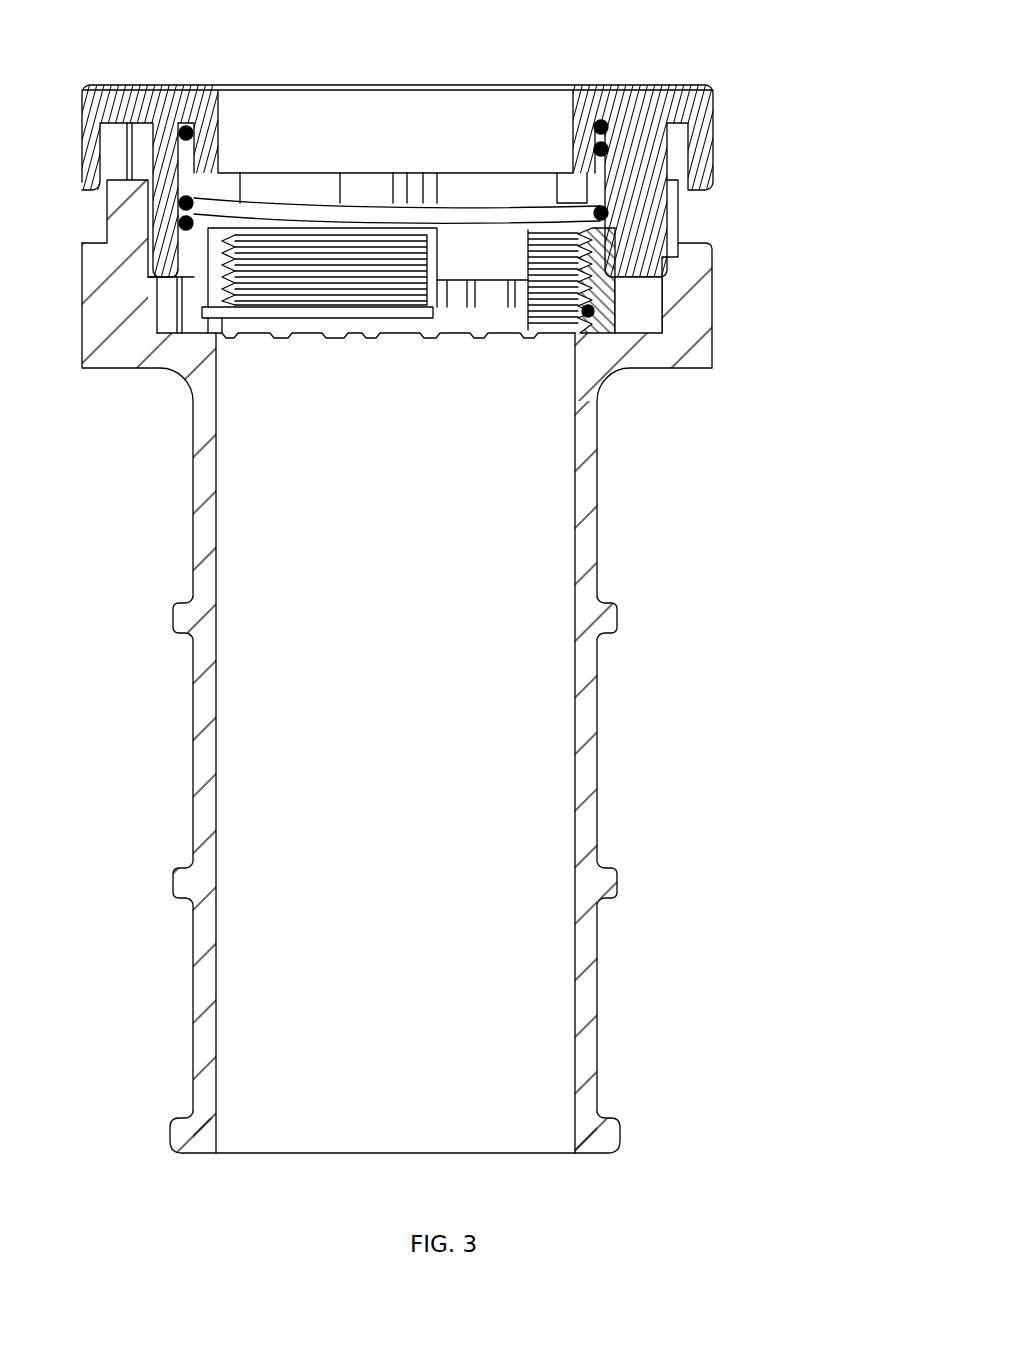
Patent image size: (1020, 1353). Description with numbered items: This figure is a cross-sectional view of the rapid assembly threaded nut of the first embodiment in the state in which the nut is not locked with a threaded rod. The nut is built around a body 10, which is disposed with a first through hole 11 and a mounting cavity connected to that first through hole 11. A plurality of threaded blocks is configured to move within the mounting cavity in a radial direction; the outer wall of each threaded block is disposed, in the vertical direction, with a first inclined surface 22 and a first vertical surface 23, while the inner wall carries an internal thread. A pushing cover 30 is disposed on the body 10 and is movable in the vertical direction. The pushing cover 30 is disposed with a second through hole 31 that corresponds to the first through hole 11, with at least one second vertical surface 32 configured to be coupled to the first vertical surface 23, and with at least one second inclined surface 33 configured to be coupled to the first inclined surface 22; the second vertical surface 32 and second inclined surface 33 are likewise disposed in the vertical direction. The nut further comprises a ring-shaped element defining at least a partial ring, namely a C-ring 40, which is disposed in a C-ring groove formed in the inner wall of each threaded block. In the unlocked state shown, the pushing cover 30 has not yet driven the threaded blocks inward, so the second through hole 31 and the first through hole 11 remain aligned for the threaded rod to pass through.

The body 10 is at (598, 790).
The first through hole 11 is at (540, 977).
The first inclined surface 22 is at (617, 268).
The first vertical surface 23 is at (615, 314).
The pushing cover 30 is at (648, 108).
The second through hole 31 is at (378, 112).
The second vertical surface 32 is at (604, 240).
The second inclined surface 33 is at (614, 258).
The C-ring 40 is at (602, 330).